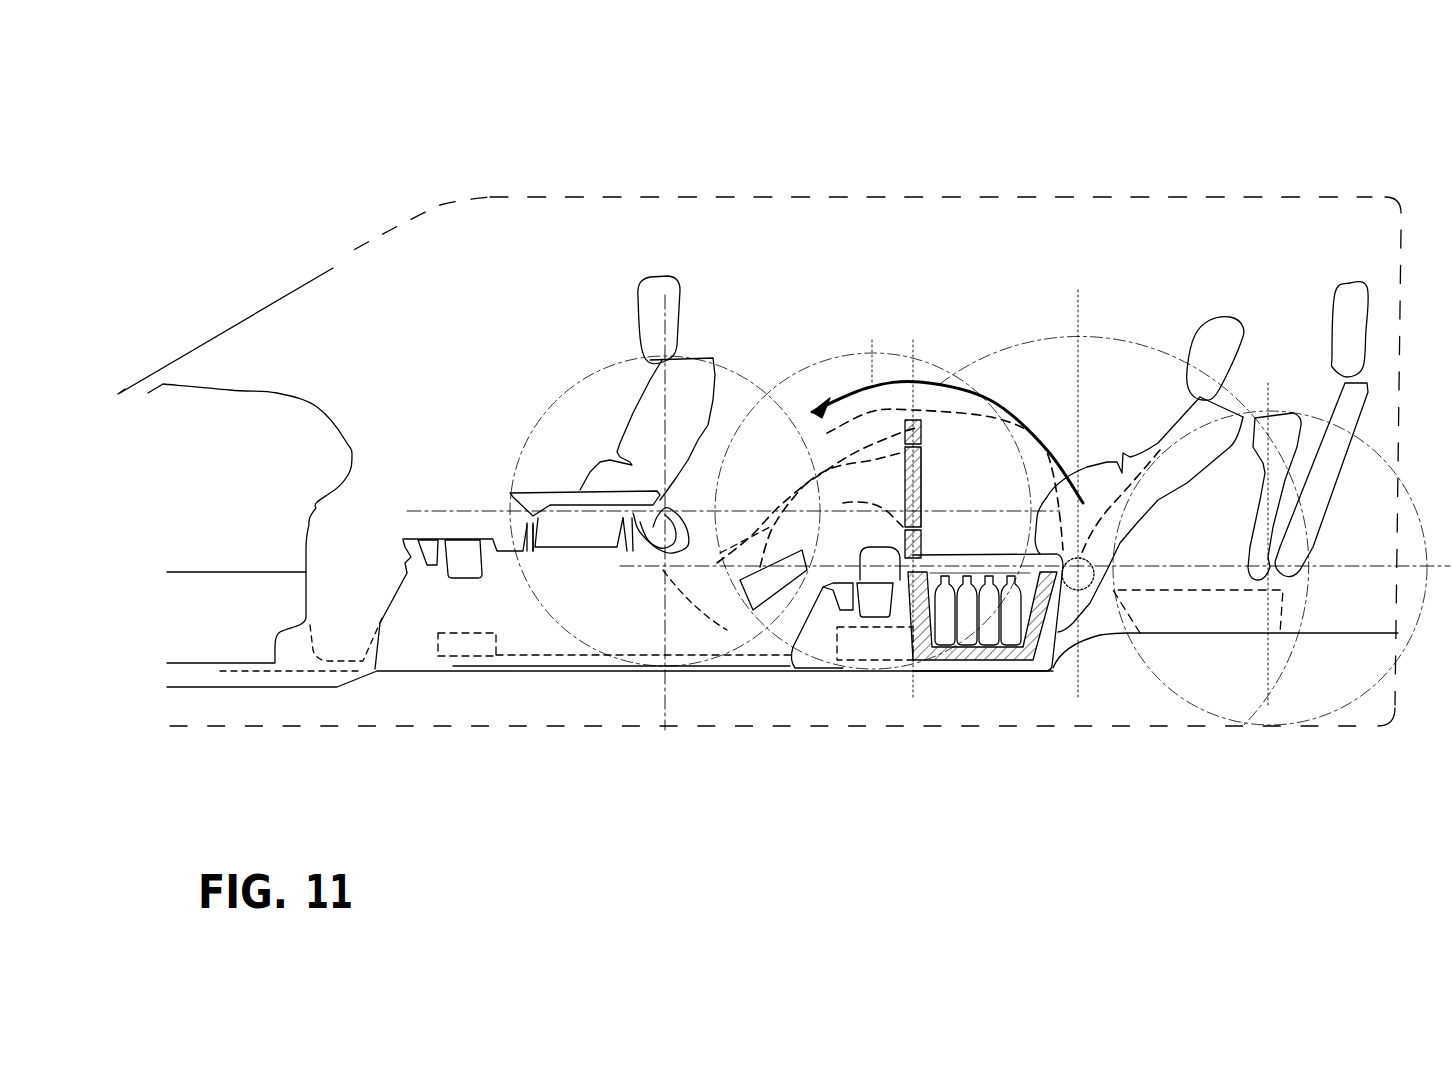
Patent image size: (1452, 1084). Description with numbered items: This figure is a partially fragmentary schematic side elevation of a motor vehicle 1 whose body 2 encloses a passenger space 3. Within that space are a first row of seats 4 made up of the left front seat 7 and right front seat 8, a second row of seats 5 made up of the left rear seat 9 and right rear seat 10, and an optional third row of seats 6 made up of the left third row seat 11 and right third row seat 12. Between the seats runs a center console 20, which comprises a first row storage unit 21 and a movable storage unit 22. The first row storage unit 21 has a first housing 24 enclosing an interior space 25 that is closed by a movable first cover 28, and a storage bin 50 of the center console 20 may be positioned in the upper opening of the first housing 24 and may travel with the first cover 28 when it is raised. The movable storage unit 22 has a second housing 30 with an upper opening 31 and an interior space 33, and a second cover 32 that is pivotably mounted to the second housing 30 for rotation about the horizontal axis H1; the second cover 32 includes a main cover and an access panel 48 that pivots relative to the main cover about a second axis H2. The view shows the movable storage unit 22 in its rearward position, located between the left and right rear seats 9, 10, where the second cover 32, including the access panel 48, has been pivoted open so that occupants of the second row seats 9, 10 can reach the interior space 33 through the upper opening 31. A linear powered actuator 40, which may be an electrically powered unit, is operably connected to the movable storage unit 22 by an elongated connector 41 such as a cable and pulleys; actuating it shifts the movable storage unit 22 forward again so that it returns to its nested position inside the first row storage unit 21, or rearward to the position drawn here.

The motor vehicle 1 is at (1002, 150).
The body 2 is at (1168, 196).
The passenger space 3 is at (850, 262).
The first row of seats 4 is at (573, 330).
The second row of seats 5 is at (1032, 338).
The third row of seats 6 is at (1290, 352).
The left front seat 7 is at (697, 357).
The right front seat 8 is at (659, 320).
The left rear seat 9 is at (1237, 433).
The right rear seat 10 is at (1215, 359).
The left third row seat 11 is at (1359, 420).
The right third row seat 12 is at (1349, 329).
The center console 20 is at (462, 528).
The first row storage unit 21 is at (431, 538).
The movable storage unit 22 is at (930, 675).
The first housing 24 is at (853, 663).
The interior space 25 is at (556, 599).
The first cover 28 is at (512, 490).
The second housing 30 is at (958, 660).
The upper opening 31 is at (990, 567).
The second cover 32 is at (903, 454).
The interior space 33 is at (1008, 660).
The linear powered actuator 40 is at (473, 662).
The elongated connector 41 is at (545, 675).
The access panel 48 is at (903, 500).
The storage bin 50 is at (566, 542).
The axis H1 is at (888, 663).
The axis H2 is at (923, 515).